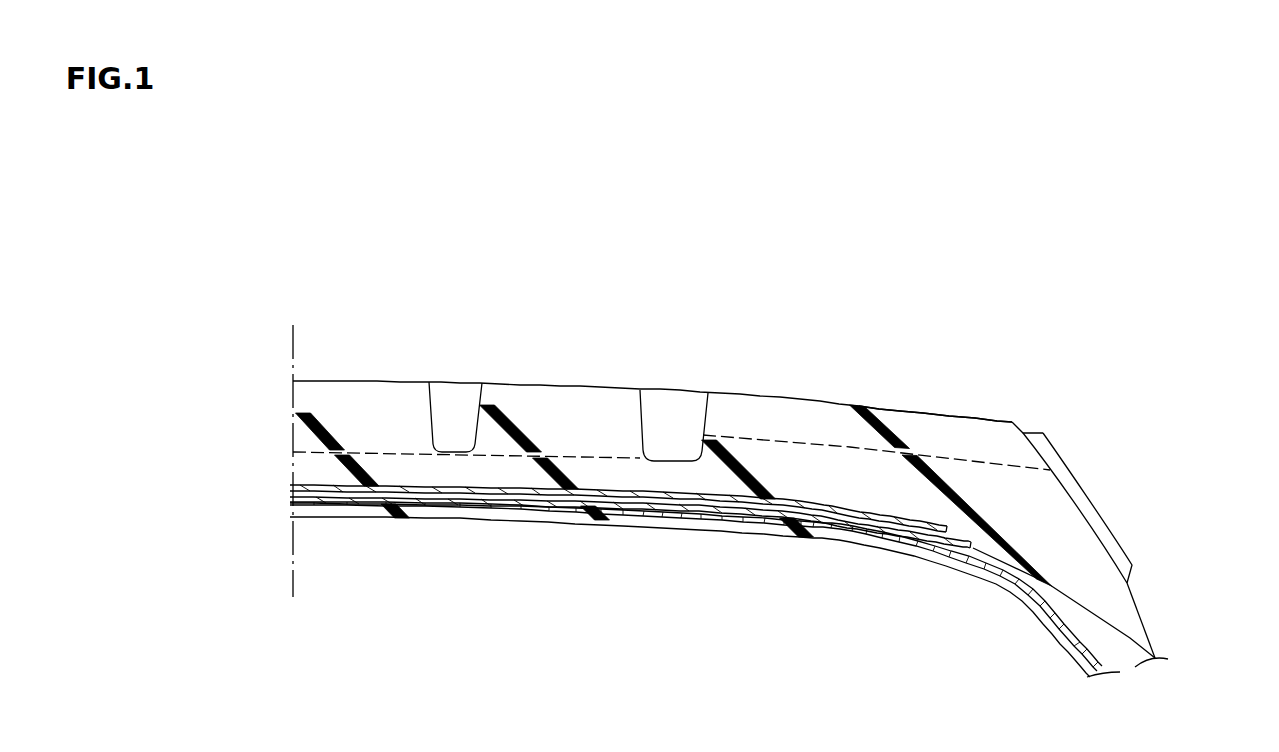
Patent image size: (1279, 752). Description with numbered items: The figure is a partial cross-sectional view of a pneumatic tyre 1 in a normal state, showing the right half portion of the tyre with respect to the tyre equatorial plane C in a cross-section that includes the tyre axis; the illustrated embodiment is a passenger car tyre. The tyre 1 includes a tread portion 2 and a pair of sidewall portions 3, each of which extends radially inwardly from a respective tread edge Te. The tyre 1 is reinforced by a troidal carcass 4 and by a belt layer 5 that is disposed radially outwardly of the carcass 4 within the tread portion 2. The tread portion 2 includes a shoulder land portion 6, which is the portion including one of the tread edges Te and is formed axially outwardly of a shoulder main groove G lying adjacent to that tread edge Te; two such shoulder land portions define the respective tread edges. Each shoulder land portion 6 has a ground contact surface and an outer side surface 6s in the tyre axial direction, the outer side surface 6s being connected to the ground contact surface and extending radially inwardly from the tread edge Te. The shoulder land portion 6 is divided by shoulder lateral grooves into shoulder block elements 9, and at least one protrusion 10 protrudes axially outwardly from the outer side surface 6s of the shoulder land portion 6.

The pneumatic tyre 1 is at (982, 313).
The tread portion 2 is at (552, 365).
The sidewall portion 3 is at (1188, 528).
The carcass 4 is at (653, 510).
The belt layer 5 is at (517, 490).
The shoulder land portion 6 is at (747, 395).
The outer side surface 6s is at (1140, 615).
The shoulder block element 9 is at (908, 410).
The protrusion 10 is at (1077, 490).
The tyre equatorial plane C is at (293, 448).
The shoulder main groove G is at (673, 417).
The tread edge Te is at (1012, 422).